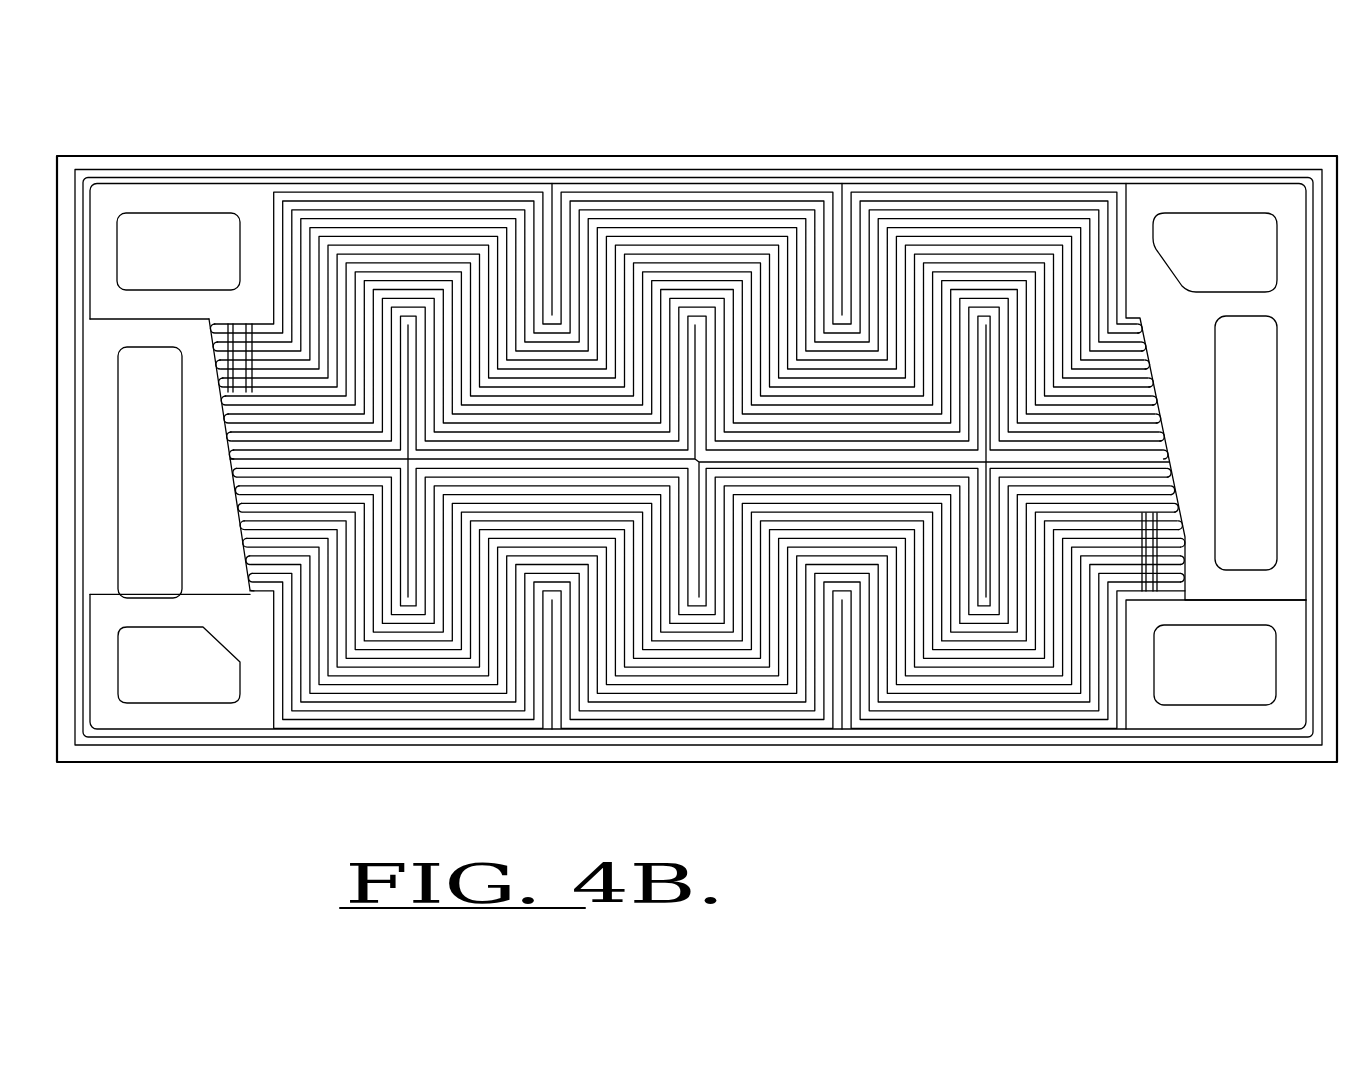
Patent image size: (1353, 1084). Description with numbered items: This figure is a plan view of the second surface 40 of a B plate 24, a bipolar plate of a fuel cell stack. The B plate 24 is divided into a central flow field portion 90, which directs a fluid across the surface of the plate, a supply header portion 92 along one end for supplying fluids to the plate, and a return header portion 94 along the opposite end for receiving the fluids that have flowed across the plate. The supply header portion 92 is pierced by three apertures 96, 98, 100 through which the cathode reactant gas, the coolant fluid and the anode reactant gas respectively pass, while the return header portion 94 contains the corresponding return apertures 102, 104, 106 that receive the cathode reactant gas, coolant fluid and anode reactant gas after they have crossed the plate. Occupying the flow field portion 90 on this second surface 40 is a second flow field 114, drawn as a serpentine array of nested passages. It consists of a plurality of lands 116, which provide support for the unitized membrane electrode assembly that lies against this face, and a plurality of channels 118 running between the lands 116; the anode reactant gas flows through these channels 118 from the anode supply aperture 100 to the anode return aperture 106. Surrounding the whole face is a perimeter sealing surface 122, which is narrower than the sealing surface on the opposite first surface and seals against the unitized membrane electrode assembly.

The B plate 24 is at (1133, 818).
The second surface 40 is at (978, 824).
The flow field portion 90 is at (742, 146).
The supply header portion 92 is at (1224, 148).
The return header portion 94 is at (168, 148).
The cathode supply aperture 96 is at (1228, 358).
The coolant supply aperture 98 is at (1183, 228).
The anode supply aperture 100 is at (1192, 688).
The cathode return aperture 102 is at (158, 540).
The coolant return aperture 104 is at (180, 696).
The anode return aperture 106 is at (223, 232).
The second flow field 114 is at (566, 650).
The lands 116 is at (770, 712).
The channels 118 is at (817, 710).
The sealing surface 122 is at (1303, 663).